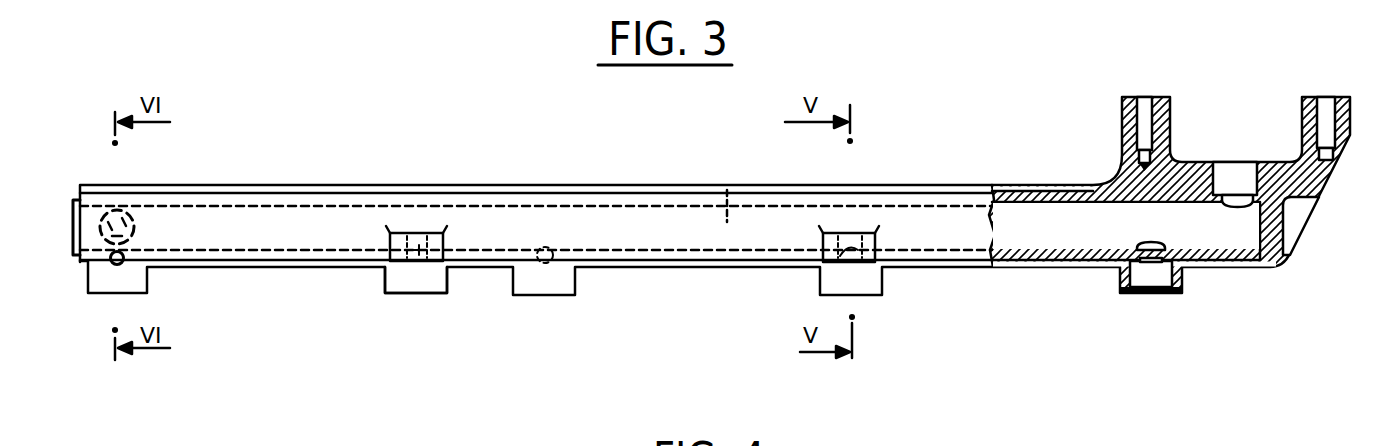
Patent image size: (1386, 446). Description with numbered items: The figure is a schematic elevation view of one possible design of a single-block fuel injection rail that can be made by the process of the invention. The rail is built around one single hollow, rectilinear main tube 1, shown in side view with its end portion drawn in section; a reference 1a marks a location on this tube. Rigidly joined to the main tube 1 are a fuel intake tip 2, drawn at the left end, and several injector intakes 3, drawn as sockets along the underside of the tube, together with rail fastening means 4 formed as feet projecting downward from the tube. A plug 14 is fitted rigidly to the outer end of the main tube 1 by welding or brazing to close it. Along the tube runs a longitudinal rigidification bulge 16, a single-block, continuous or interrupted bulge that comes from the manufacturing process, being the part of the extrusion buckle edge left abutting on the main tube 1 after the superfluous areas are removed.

The main tube 1 is at (616, 198).
The rail bore 1a is at (737, 174).
The fuel intake tip 2 is at (120, 210).
The injector intake 3 is at (432, 240).
The rail fastening means 4 is at (416, 286).
The plug 14 is at (78, 263).
The longitudinal rigidification bulge 16 is at (291, 268).